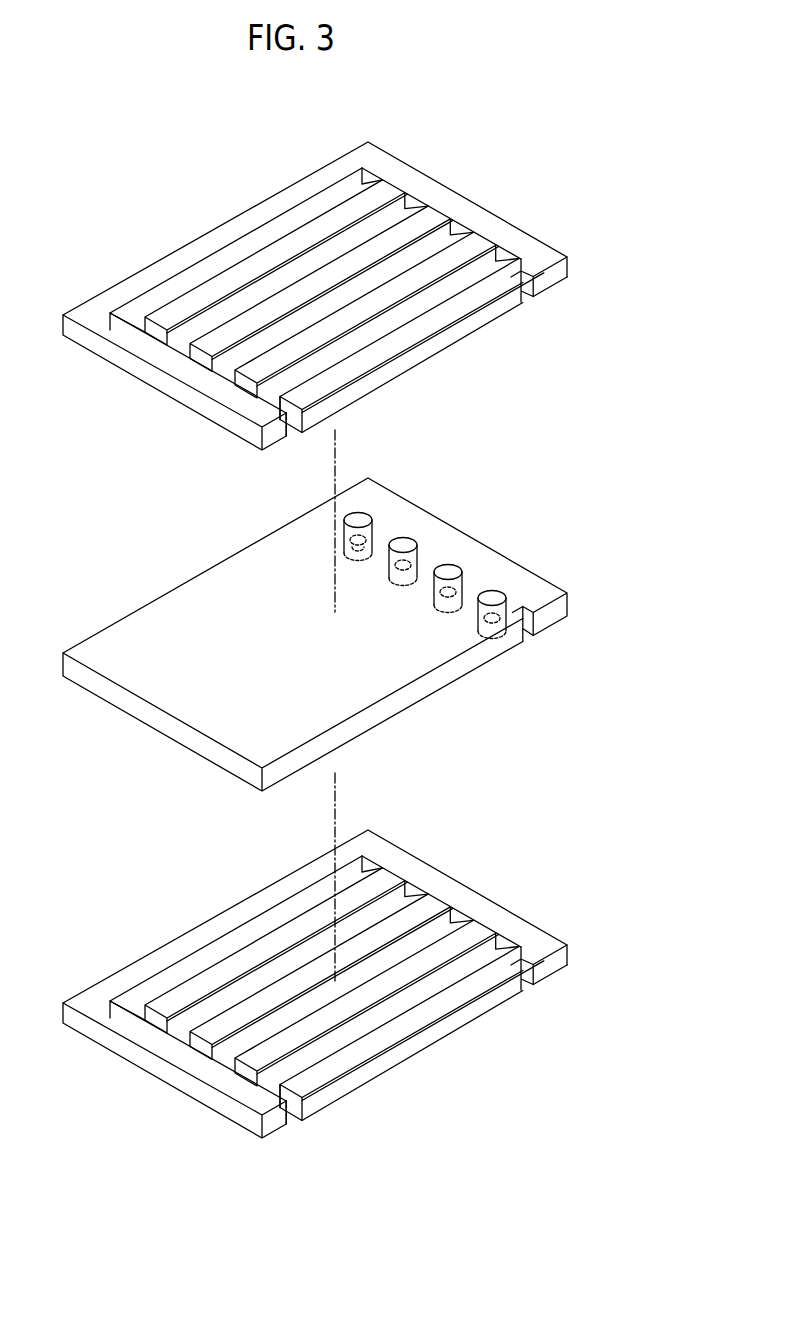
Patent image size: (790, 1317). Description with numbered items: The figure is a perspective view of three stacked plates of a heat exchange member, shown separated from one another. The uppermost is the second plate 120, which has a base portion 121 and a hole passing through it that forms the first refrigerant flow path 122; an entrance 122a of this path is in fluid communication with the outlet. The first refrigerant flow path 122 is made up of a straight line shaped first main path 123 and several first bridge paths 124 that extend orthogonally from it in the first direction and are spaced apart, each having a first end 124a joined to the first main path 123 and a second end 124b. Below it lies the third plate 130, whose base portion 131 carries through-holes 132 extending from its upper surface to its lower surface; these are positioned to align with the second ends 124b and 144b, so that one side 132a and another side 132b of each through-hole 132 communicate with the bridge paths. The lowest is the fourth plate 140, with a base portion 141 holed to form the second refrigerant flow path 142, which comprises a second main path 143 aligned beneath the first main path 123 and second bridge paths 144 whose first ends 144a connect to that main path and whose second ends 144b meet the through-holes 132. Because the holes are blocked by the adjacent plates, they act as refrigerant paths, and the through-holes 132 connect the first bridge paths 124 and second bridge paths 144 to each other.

The second plate 120 is at (552, 128).
The base portion 121 is at (455, 208).
The first refrigerant flow path 122 is at (213, 143).
The entrance of the first refrigerant flow path 122a is at (294, 428).
The first main path 123 is at (199, 348).
The first bridge paths 124 is at (409, 306).
The first ends of the first bridge paths 124a is at (142, 303).
The second ends of the first bridge paths 124b is at (379, 163).
The third plate 130 is at (530, 449).
The base portion 131 is at (425, 650).
The through-holes 132 is at (439, 538).
The one side of the through-hole 132a is at (360, 519).
The another side of the through-hole 132b is at (368, 540).
The fourth plate 140 is at (548, 824).
The base portion 141 is at (455, 896).
The second refrigerant flow path 142 is at (213, 831).
The second main path 143 is at (199, 1036).
The second bridge paths 144 is at (409, 994).
The first ends of the second bridge paths 144a is at (142, 991).
The second ends of the second bridge paths 144b is at (379, 851).